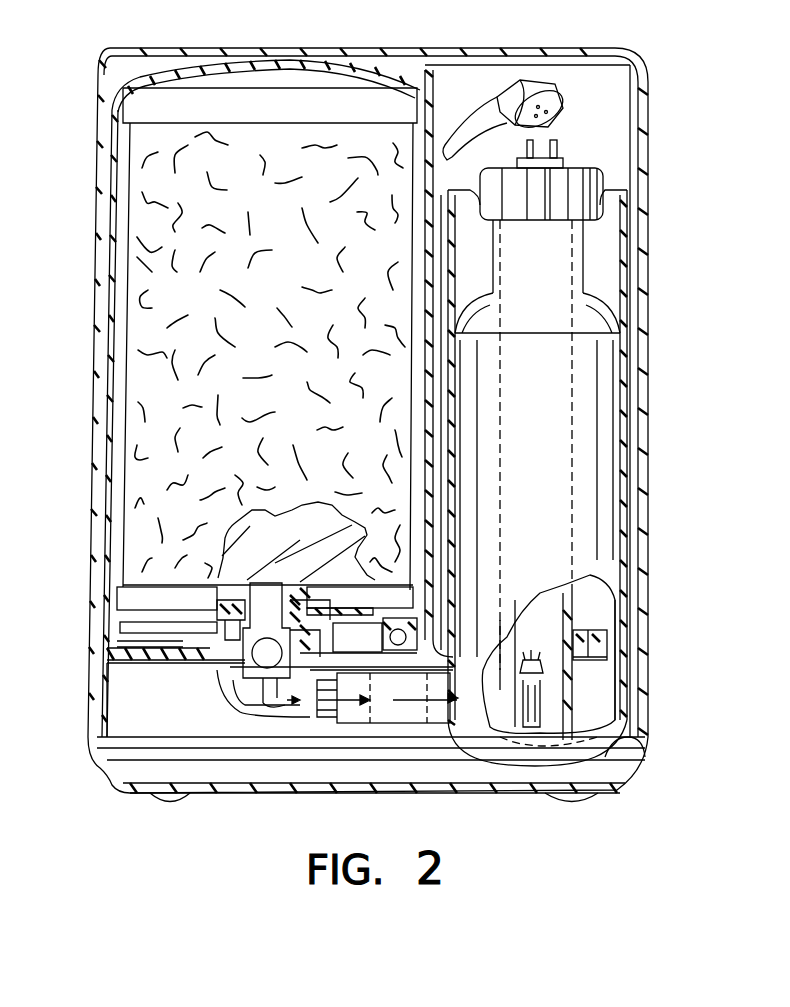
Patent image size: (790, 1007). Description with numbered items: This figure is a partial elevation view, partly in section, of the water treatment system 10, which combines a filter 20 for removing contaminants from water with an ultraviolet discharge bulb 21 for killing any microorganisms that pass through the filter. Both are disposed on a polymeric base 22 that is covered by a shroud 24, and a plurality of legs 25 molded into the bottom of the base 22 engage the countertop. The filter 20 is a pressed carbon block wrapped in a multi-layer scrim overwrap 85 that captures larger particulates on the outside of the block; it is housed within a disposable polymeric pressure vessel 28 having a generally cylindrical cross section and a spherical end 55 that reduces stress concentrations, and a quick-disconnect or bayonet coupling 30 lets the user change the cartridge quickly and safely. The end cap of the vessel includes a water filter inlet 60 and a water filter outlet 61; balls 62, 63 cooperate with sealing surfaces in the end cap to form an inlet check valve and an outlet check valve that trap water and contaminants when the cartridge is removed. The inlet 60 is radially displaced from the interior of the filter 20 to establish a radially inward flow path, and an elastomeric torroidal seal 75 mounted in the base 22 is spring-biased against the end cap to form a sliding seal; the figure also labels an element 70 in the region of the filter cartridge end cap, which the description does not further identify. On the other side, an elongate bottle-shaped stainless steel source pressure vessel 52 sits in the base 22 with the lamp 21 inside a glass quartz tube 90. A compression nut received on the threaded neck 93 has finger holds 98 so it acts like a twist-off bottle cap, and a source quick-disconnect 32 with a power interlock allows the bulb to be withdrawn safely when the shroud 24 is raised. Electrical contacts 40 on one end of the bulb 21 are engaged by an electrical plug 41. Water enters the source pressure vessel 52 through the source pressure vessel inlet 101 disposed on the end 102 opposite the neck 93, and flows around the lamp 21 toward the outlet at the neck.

The water treatment system 10 is at (688, 56).
The filter 20 is at (130, 220).
The ultraviolet discharge bulb 21 is at (587, 597).
The base 22 is at (500, 765).
The shroud 24 is at (640, 377).
The legs 25 is at (165, 800).
The pressure vessel 28 is at (107, 482).
The quick-disconnect coupling 30 is at (93, 633).
The source quick-disconnect 32 is at (607, 177).
The electrical contacts 40 is at (555, 142).
The electrical plug 41 is at (520, 88).
The source pressure vessel 52 is at (607, 305).
The spherical end 55 is at (347, 63).
The water filter inlet 60 is at (400, 652).
The water filter outlet 61 is at (257, 715).
The inlet check valve ball 62 is at (366, 690).
The outlet check valve ball 63 is at (217, 662).
The support plate 70 is at (225, 605).
The torroidal seal 75 is at (440, 637).
The scrim overwrap 85 is at (150, 273).
The quartz tube 90 is at (573, 627).
The threaded neck 93 is at (587, 250).
The finger holds 98 is at (547, 183).
The source pressure vessel inlet 101 is at (447, 727).
The end of source pressure vessel 102 is at (640, 757).